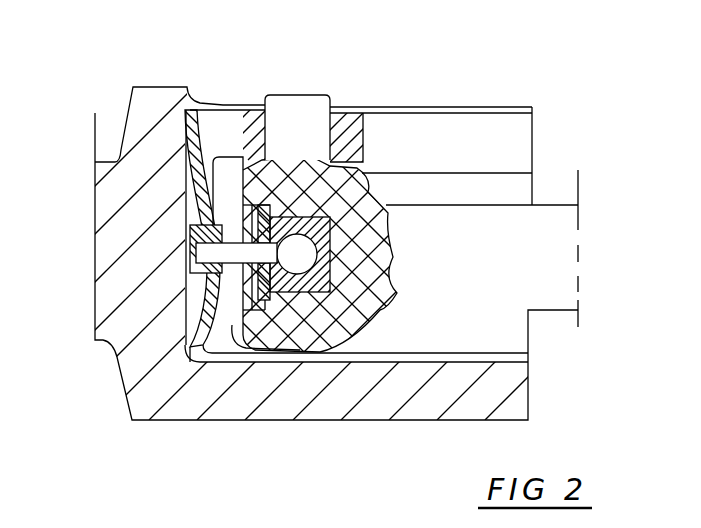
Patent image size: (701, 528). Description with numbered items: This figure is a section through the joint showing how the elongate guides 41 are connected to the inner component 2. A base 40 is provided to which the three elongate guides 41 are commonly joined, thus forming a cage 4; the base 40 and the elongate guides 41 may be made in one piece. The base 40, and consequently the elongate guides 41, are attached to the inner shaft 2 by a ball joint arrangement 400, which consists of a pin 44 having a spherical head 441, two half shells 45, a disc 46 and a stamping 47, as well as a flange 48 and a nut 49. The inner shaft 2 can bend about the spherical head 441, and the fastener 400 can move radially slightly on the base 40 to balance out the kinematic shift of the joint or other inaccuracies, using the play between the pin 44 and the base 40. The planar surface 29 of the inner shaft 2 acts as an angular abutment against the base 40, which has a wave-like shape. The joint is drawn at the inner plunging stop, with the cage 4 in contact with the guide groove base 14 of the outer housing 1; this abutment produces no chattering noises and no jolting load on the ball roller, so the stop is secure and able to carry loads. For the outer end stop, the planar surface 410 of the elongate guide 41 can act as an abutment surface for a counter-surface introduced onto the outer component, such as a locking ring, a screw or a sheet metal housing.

The housing 1 is at (490, 400).
The inner component 2 is at (353, 307).
The cage 4 is at (187, 130).
The guide groove base 14 is at (187, 127).
The planar surface 29 is at (232, 328).
The base 40 is at (200, 187).
The elongate guide 41 is at (362, 117).
The pin 44 is at (243, 173).
The half shell 45 is at (337, 200).
The disc 46 is at (262, 300).
The stamping 47 is at (262, 250).
The flange 48 is at (196, 358).
The nut 49 is at (190, 275).
The ball joint arrangement 400 is at (190, 344).
The planar surface 410 is at (367, 132).
The spherical head 441 is at (303, 262).